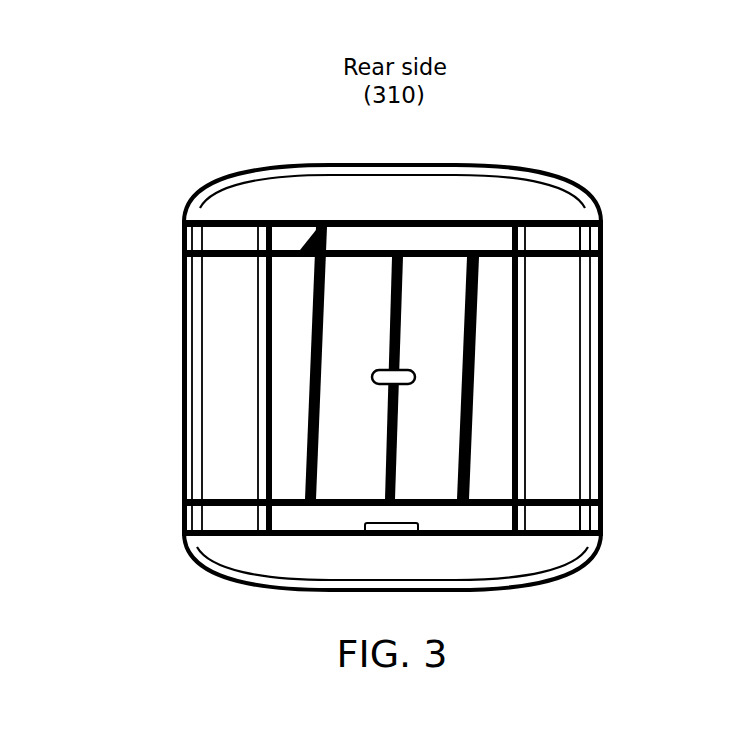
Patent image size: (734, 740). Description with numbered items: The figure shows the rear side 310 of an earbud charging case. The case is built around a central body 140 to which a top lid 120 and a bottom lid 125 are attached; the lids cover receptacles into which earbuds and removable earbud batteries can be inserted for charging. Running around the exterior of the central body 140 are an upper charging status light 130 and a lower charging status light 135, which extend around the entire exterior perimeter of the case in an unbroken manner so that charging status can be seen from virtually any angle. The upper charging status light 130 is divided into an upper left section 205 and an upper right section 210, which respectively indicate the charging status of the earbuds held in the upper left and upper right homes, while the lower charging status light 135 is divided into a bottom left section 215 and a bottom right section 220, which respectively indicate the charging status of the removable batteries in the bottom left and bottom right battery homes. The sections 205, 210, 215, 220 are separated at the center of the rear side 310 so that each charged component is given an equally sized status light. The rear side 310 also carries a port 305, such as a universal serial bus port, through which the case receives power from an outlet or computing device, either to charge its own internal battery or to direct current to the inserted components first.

The top lid 120 is at (273, 167).
The bottom lid 125 is at (291, 591).
The upper charging status light 130 is at (289, 259).
The lower charging status light 135 is at (284, 488).
The central body 140 is at (603, 410).
The upper left section 205 is at (242, 250).
The upper right section 210 is at (558, 250).
The bottom left section 215 is at (233, 505).
The bottom right section 220 is at (550, 505).
The port 305 is at (415, 376).
The rear side 310 is at (362, 530).